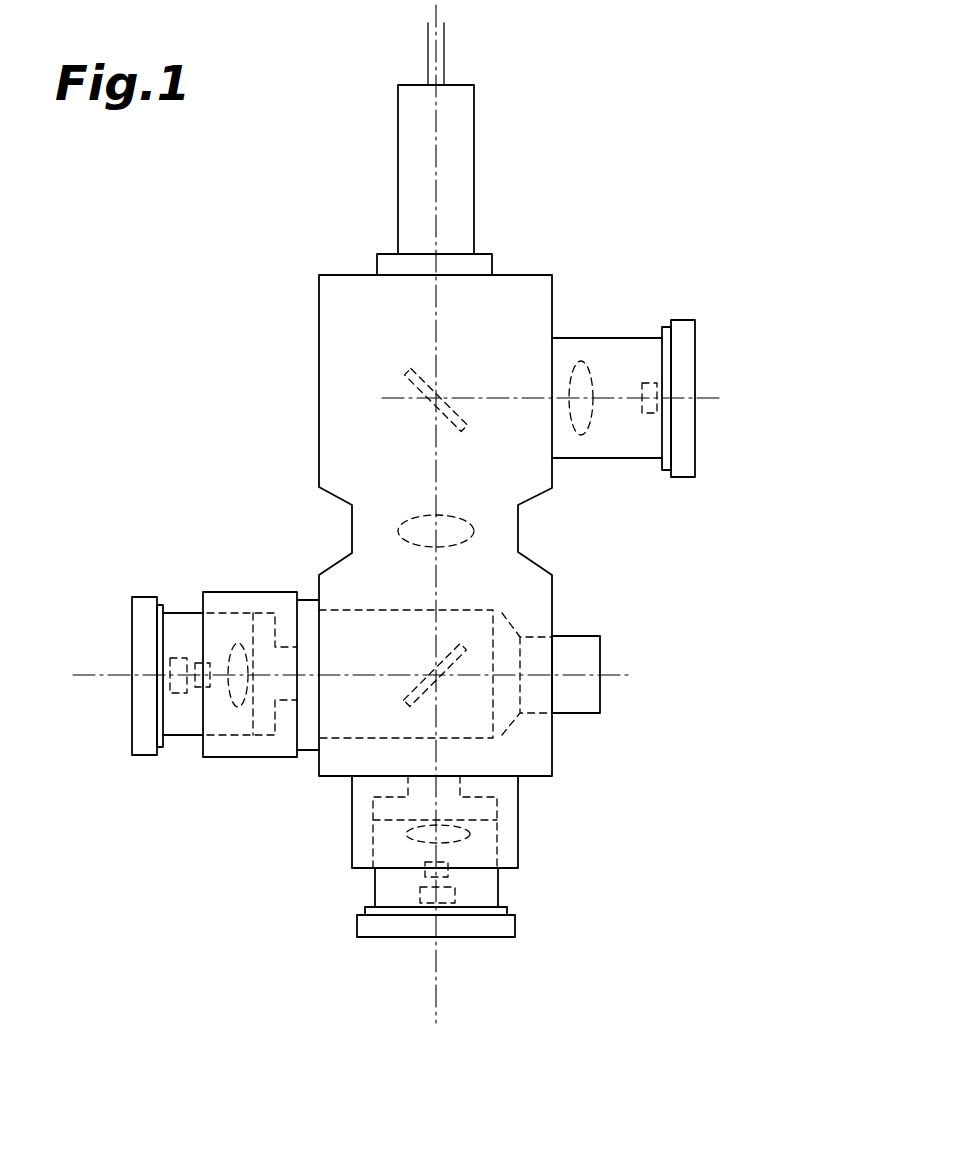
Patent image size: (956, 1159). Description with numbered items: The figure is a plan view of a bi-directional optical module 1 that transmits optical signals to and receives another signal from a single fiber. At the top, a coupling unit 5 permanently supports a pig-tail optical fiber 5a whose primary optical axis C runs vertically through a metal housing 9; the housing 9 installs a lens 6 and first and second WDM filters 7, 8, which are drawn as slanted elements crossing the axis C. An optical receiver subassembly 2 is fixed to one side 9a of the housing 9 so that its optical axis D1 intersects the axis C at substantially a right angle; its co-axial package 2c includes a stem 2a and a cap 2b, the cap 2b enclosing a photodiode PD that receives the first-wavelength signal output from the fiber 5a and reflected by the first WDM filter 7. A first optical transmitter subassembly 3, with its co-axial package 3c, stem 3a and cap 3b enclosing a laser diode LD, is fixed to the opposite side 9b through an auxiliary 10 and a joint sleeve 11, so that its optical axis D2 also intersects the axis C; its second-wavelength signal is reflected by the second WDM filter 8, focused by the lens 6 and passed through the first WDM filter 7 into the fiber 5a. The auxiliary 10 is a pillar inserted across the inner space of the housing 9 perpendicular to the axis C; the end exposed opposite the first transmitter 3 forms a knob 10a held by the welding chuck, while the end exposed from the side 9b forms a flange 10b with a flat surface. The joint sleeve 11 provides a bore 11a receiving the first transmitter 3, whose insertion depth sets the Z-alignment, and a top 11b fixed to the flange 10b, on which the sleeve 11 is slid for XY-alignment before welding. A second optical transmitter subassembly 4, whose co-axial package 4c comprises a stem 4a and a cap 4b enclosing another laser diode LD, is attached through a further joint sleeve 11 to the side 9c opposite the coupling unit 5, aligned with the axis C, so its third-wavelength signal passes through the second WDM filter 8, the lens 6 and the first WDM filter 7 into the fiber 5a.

The optical module 1 is at (537, 80).
The optical receiver subassembly 2 is at (628, 300).
The stem 2a is at (697, 325).
The cap 2b is at (662, 338).
The co-axial package 2c is at (593, 330).
The first optical transmitter subassembly 3 is at (132, 580).
The stem 3a is at (140, 756).
The cap 3b is at (170, 740).
The co-axial package 3c is at (182, 595).
The second optical transmitter subassembly 4 is at (350, 946).
The stem 4a is at (458, 938).
The cap 4b is at (498, 882).
The co-axial package 4c is at (365, 887).
The coupling unit 5 is at (489, 136).
The optical fiber 5a is at (446, 45).
The lens 6 is at (455, 518).
The first WDM filter 7 is at (402, 372).
The second WDM filter 8 is at (460, 645).
The housing 9 is at (319, 272).
The side of housing 9a is at (553, 469).
The side of housing 9b is at (319, 767).
The side of housing 9c is at (553, 777).
The auxiliary 10 is at (588, 628).
The knob 10a is at (592, 648).
The flange 10b is at (318, 600).
The joint sleeve 11 is at (238, 588).
The bore 11a is at (265, 722).
The top 11b is at (297, 633).
The optical axis C is at (440, 12).
The optical axis D1 is at (718, 393).
The optical axis D2 is at (620, 680).
The photodiode PD is at (650, 415).
The laser diode LD is at (200, 690).